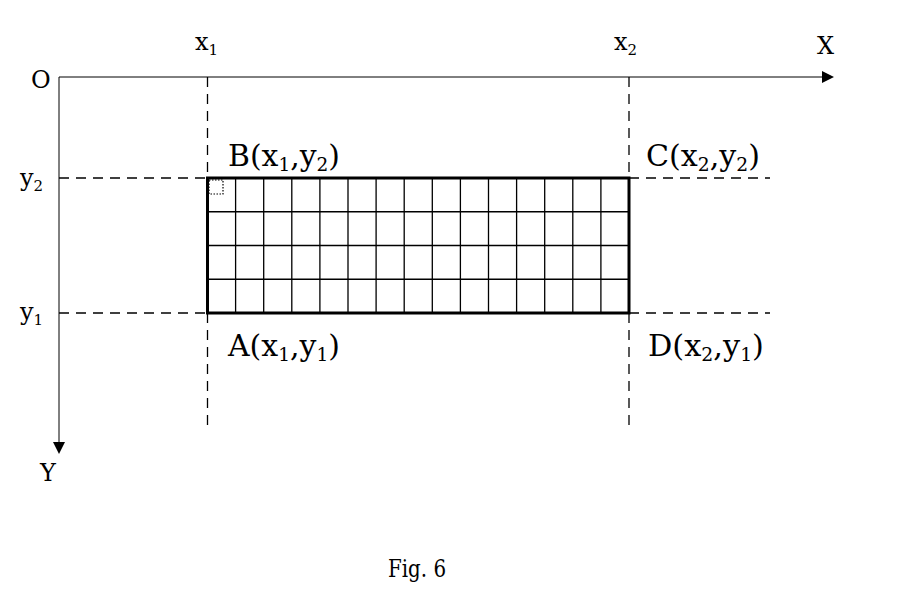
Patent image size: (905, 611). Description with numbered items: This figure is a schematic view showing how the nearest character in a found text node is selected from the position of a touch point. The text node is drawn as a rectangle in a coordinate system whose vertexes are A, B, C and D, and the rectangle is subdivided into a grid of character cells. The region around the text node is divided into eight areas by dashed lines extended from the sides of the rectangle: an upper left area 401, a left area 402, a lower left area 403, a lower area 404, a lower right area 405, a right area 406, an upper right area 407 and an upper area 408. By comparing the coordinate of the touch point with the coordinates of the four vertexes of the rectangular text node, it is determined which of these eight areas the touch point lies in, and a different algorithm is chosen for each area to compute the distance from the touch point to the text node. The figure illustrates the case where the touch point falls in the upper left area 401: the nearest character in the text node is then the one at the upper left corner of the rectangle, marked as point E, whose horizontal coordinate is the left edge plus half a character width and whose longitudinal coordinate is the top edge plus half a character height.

The upper left area 401 is at (133, 127).
The left area 402 is at (133, 245).
The lower left area 403 is at (133, 369).
The lower area 404 is at (417, 369).
The lower right area 405 is at (699, 370).
The right area 406 is at (699, 245).
The upper right area 407 is at (699, 127).
The upper area 408 is at (418, 127).
The point E is at (222, 195).